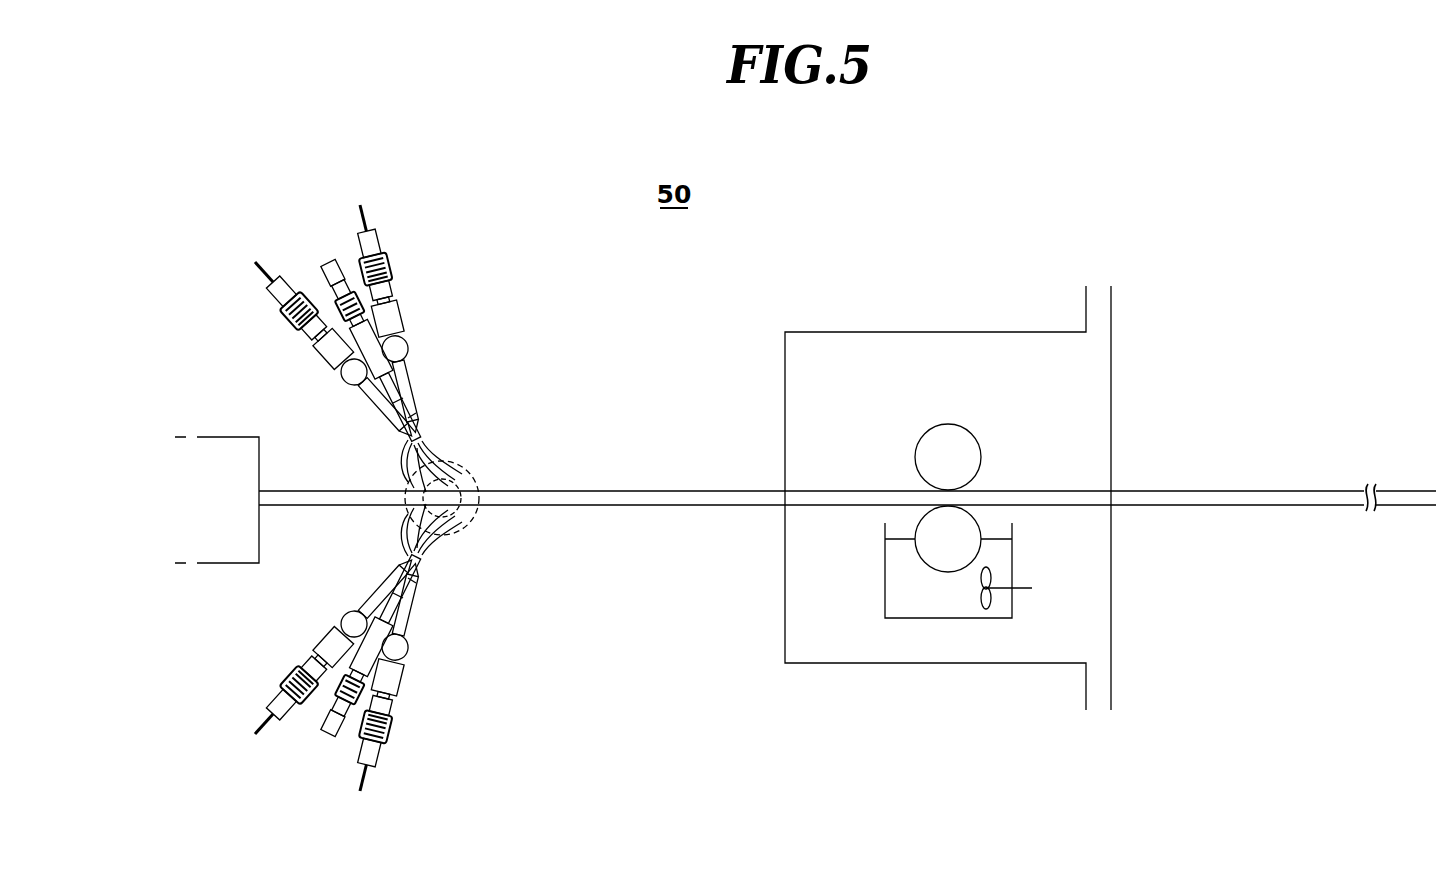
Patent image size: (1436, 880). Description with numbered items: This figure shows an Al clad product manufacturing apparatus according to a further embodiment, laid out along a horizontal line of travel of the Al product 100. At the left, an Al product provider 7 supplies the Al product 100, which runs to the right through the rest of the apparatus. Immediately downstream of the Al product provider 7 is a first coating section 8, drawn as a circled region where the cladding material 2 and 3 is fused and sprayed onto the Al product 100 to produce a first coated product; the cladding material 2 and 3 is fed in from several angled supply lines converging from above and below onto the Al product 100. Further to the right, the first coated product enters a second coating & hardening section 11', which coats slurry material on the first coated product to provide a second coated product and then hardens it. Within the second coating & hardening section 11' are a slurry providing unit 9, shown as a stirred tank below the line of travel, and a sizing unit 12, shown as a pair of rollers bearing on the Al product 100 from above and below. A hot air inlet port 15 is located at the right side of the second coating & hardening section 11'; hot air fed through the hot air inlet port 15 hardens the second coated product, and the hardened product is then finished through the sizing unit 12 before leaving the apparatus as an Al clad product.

The cladding material 2 is at (368, 214).
The cladding material 3 is at (262, 273).
The Al product provider 7 is at (228, 564).
The first coating section 8 is at (472, 466).
The slurry providing unit 9 is at (914, 608).
The second coating & hardening section 11' is at (935, 484).
The sizing unit 12 is at (978, 443).
The hot air inlet port 15 is at (1106, 297).
The Al product 100 is at (614, 491).